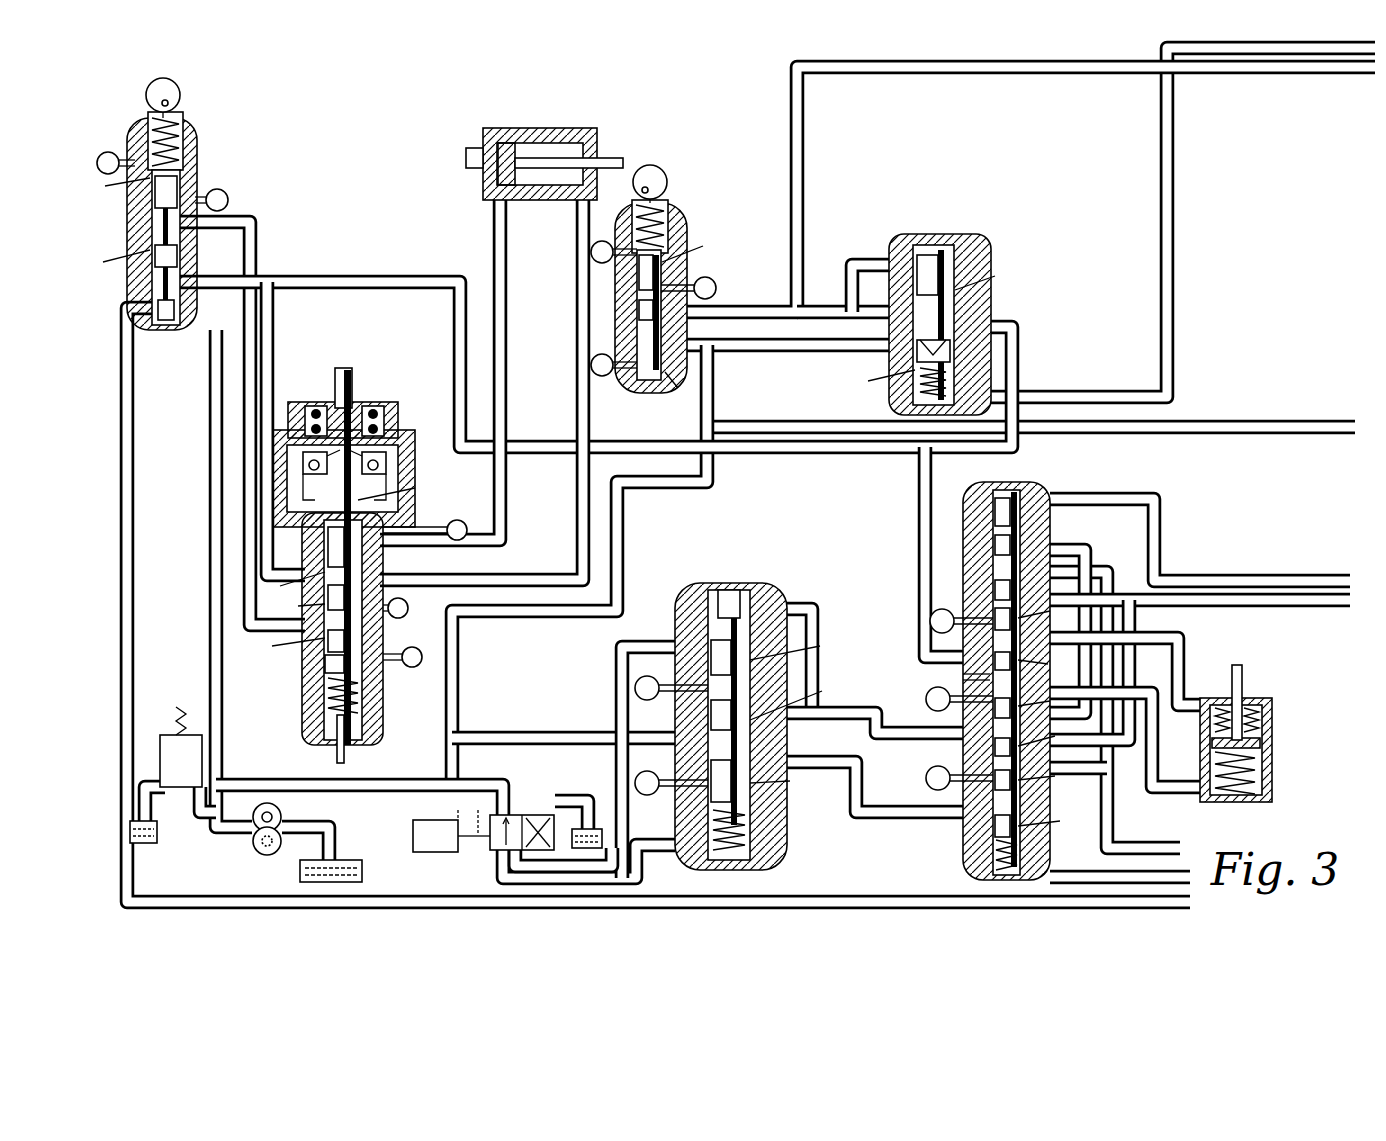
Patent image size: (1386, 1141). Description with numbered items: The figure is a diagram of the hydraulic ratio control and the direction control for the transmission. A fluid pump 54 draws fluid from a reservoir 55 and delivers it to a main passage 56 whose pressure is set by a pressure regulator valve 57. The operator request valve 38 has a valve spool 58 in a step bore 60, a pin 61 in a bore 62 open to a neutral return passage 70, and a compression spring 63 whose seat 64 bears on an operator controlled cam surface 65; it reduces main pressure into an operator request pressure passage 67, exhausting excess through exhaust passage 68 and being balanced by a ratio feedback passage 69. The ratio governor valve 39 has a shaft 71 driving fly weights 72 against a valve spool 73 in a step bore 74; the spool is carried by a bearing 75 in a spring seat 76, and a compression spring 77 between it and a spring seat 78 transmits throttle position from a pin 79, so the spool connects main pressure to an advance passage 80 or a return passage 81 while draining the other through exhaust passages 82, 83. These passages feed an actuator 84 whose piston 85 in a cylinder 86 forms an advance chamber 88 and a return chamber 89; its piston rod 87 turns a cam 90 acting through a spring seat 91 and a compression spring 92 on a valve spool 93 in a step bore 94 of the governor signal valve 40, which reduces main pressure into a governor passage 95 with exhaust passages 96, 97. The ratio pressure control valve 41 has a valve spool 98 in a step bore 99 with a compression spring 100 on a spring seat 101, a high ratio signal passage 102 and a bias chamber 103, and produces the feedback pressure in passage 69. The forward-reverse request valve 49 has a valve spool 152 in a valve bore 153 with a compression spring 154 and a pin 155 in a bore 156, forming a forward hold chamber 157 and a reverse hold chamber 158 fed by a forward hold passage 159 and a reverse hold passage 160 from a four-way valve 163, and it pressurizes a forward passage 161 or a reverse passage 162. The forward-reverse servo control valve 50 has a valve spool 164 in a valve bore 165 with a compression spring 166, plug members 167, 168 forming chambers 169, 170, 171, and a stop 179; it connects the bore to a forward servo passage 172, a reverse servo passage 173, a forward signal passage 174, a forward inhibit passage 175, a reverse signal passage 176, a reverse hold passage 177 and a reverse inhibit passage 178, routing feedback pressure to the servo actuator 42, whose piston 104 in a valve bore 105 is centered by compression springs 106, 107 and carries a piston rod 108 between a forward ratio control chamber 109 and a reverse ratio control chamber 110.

The operator request valve 38 is at (189, 199).
The ratio governor valve 39 is at (367, 549).
The governor signal valve 40 is at (674, 270).
The ratio pressure control valve 41 is at (950, 307).
The servo actuator 42 is at (1247, 736).
The forward-reverse request valve 49 is at (747, 709).
The forward-reverse servo control valve 50 is at (995, 668).
The fluid pump 54 is at (264, 846).
The reservoir 55 is at (362, 875).
The main passage 56 is at (218, 835).
The pressure regulator valve 57 is at (170, 750).
The valve spool 58 is at (152, 212).
The step bore 60 is at (155, 230).
The pin 61 is at (166, 322).
The bore 62 is at (155, 285).
The compression spring 63 is at (133, 150).
The spring seat 64 is at (150, 122).
The cam surface 65 is at (170, 80).
The operator request pressure passage 67 is at (258, 250).
The exhaust passage 68 is at (230, 200).
The ratio feedback passage 69 is at (392, 276).
The neutral return passage 70 is at (133, 460).
The shaft 71 is at (352, 386).
The fly weights 72 is at (380, 470).
The valve spool 73 is at (360, 520).
The step bore 74 is at (360, 582).
The bearing 75 is at (360, 672).
The spring seat 76 is at (325, 665).
The compression spring 77 is at (362, 705).
The spring seat 78 is at (305, 718).
The pin 79 is at (352, 755).
The advance passage 80 is at (507, 497).
The return passage 81 is at (545, 582).
The exhaust passage 82 is at (460, 520).
The exhaust passage 83 is at (408, 608).
The actuator 84 is at (540, 128).
The piston 85 is at (506, 150).
The cylinder 86 is at (568, 146).
The piston rod 87 is at (575, 200).
The advance chamber 88 is at (475, 152).
The return chamber 89 is at (540, 205).
The cam 90 is at (635, 185).
The spring seat 91 is at (660, 215).
The compression spring 92 is at (668, 228).
The valve spool 93 is at (672, 320).
The step bore 94 is at (638, 310).
The governor passage 95 is at (775, 315).
The exhaust passage 96 is at (717, 284).
The exhaust passage 97 is at (604, 377).
The valve spool 98 is at (955, 312).
The step bore 99 is at (905, 305).
The compression spring 100 is at (952, 382).
The spring seat 101 is at (953, 350).
The high ratio signal passage 102 is at (1080, 395).
The bias chamber 103 is at (915, 398).
The piston 104 is at (1265, 745).
The valve bore 105 is at (1270, 702).
The compression spring 106 is at (1272, 785).
The compression spring 107 is at (1212, 742).
The piston rod 108 is at (1242, 680).
The forward ratio control chamber 109 is at (1215, 770).
The reverse ratio control chamber 110 is at (1222, 712).
The valve spool 152 is at (750, 690).
The valve bore 153 is at (760, 740).
The compression spring 154 is at (750, 800).
The pin 155 is at (790, 612).
The bore 156 is at (722, 612).
The forward hold chamber 157 is at (750, 838).
The reverse hold chamber 158 is at (712, 650).
The forward hold passage 159 is at (640, 872).
The reverse hold passage 160 is at (650, 650).
The forward passage 161 is at (905, 818).
The reverse passage 162 is at (990, 755).
The four-way valve 163 is at (495, 851).
The valve spool 164 is at (990, 710).
The valve bore 165 is at (963, 677).
The compression spring 166 is at (1020, 855).
The plug member 167 is at (995, 570).
The plug member 168 is at (1018, 512).
The chamber 169 is at (995, 592).
The chamber 170 is at (995, 545).
The chamber 171 is at (985, 500).
The forward servo passage 172 is at (1150, 688).
The reverse servo passage 173 is at (1172, 642).
The forward signal passage 174 is at (1125, 873).
The forward inhibit passage 175 is at (1160, 843).
The reverse signal passage 176 is at (1240, 594).
The reverse hold passage 177 is at (1100, 565).
The reverse inhibit passage 178 is at (1120, 505).
The stop 179 is at (995, 870).